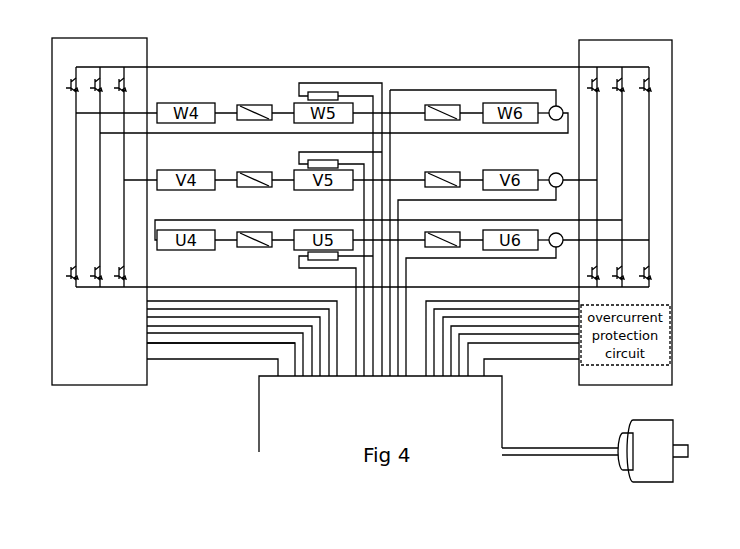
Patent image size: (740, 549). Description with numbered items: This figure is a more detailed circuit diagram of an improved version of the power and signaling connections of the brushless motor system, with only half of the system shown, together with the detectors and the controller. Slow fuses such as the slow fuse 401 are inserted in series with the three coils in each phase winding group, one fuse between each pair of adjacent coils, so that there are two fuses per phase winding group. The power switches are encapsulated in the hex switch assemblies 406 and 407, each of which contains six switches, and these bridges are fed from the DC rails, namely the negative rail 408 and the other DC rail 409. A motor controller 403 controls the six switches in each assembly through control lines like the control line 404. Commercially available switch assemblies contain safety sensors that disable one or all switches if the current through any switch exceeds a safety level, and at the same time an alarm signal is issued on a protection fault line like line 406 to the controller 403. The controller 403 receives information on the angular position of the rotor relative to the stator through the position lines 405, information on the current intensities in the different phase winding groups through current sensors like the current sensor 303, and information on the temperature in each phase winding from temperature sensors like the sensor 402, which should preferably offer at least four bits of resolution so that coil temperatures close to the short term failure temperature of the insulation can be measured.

The current sensor 303 is at (563, 102).
The slow fuse 401 is at (255, 103).
The temperature sensor 402 is at (330, 92).
The motor controller 403 is at (257, 392).
The control line 404 is at (222, 330).
The position information lines 405 is at (605, 446).
The hex switch assembly 406 is at (63, 388).
The hex switch assembly 407 is at (598, 456).
The negative rail 408 is at (137, 288).
The DC rail 409 is at (211, 66).